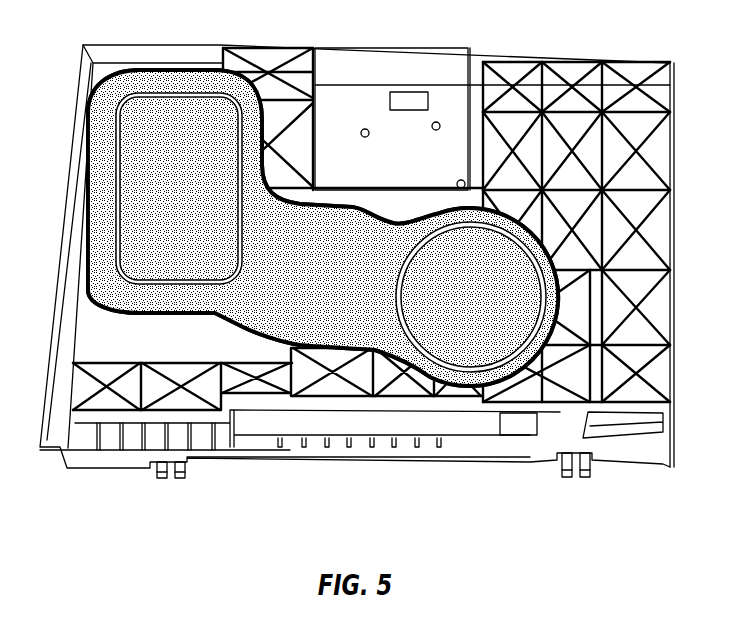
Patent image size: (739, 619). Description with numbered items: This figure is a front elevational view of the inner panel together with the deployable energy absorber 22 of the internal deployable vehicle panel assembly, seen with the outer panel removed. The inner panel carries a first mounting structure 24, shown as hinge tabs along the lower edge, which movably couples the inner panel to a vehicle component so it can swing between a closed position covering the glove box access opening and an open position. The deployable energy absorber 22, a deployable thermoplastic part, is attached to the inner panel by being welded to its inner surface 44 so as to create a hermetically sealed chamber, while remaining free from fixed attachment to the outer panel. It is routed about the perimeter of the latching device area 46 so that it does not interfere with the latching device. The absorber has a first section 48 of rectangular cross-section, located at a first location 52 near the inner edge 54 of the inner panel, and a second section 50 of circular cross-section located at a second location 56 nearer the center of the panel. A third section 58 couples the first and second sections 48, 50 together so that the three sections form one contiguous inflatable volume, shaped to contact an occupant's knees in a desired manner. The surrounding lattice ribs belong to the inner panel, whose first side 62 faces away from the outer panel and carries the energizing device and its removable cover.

The deployable energy absorber 22 is at (355, 210).
The first mounting structure 24 is at (182, 478).
The inner surface 44 is at (167, 328).
The latching device area 46 is at (440, 110).
The first section 48 is at (140, 232).
The second section 50 is at (457, 328).
The first location 52 is at (83, 297).
The inner edge 54 is at (83, 147).
The second location 56 is at (563, 287).
The third section 58 is at (333, 317).
The first side 62 is at (92, 407).